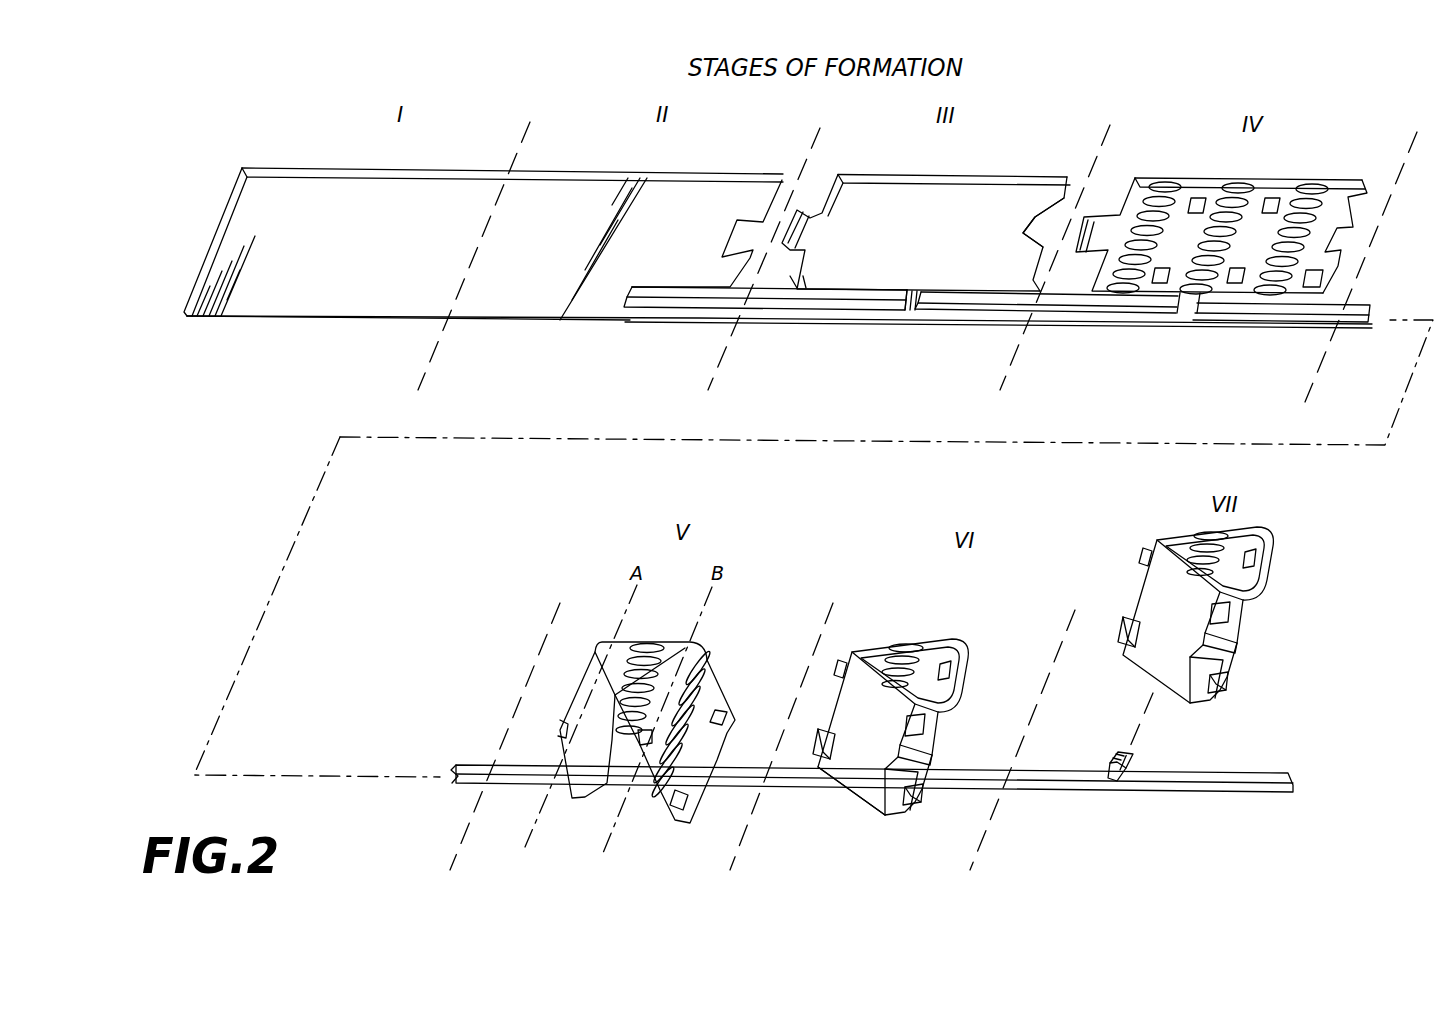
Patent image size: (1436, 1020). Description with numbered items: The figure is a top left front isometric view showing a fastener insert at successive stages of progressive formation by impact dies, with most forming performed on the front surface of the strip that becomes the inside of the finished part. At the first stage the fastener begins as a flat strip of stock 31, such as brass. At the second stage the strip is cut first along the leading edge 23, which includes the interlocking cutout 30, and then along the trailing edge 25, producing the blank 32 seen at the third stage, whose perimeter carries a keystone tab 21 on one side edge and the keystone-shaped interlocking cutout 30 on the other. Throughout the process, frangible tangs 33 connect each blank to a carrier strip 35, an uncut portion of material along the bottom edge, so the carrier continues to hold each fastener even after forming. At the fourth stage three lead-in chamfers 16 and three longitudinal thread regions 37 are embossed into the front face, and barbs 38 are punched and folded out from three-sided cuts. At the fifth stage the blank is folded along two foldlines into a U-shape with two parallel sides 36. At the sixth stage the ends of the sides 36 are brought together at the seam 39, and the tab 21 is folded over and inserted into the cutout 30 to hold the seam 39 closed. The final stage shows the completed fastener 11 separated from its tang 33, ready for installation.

The fastener 11 is at (1273, 557).
The lead-in chamfers 16 is at (1307, 187).
The keystone tab 21 is at (933, 757).
The leading edge 23 is at (792, 192).
The trailing edge 25 is at (797, 280).
The interlocking cutout 30 is at (1040, 235).
The flat strip of stock 31 is at (285, 293).
The blank 32 is at (950, 254).
The frangible tangs 33 is at (913, 313).
The carrier strip 35 is at (1095, 327).
The sides 36 is at (713, 670).
The longitudinal thread regions 37 is at (1123, 290).
The barbs 38 is at (1237, 283).
The seam 39 is at (877, 790).